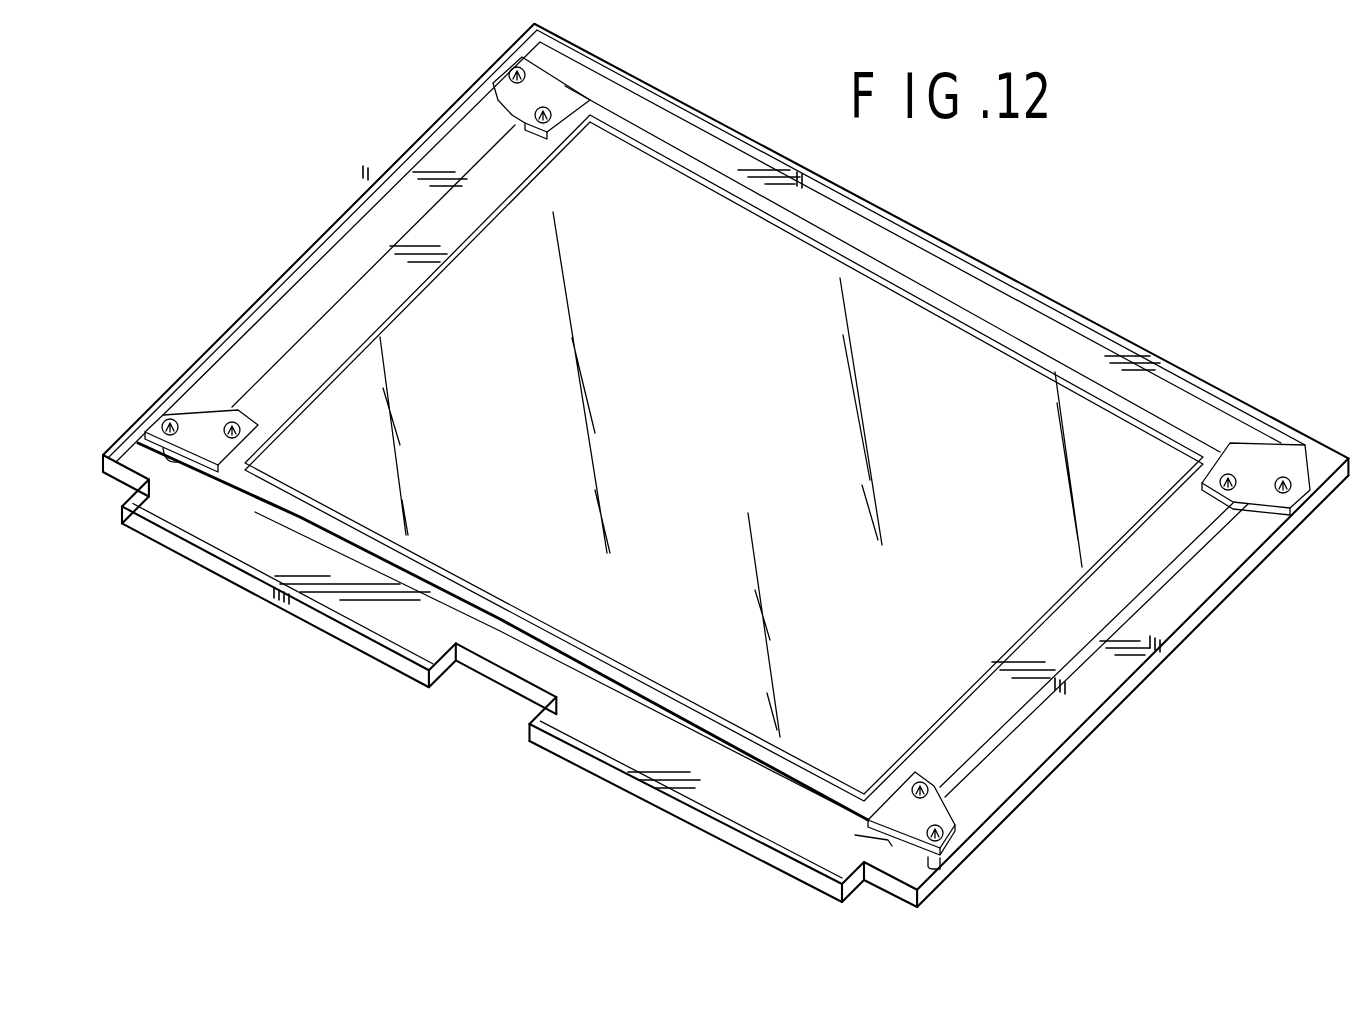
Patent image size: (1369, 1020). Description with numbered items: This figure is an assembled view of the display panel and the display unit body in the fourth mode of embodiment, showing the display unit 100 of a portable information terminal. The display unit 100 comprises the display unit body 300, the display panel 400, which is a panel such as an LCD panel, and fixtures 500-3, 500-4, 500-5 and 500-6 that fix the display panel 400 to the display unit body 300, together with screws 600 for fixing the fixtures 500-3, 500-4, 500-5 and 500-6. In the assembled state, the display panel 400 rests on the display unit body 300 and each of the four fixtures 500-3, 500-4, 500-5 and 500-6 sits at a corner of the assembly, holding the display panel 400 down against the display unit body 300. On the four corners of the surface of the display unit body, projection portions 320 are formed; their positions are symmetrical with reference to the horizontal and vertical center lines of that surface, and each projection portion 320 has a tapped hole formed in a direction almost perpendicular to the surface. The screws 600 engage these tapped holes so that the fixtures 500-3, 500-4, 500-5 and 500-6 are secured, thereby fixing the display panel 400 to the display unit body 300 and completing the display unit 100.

The display unit 100 is at (1000, 242).
The display unit body 300 is at (331, 614).
The projection portion 320 is at (939, 867).
The display panel 400 is at (646, 663).
The fixture 500-3 is at (504, 98).
The fixture 500-4 is at (205, 418).
The fixture 500-5 is at (1258, 495).
The fixture 500-6 is at (945, 810).
The screw 600 is at (944, 831).